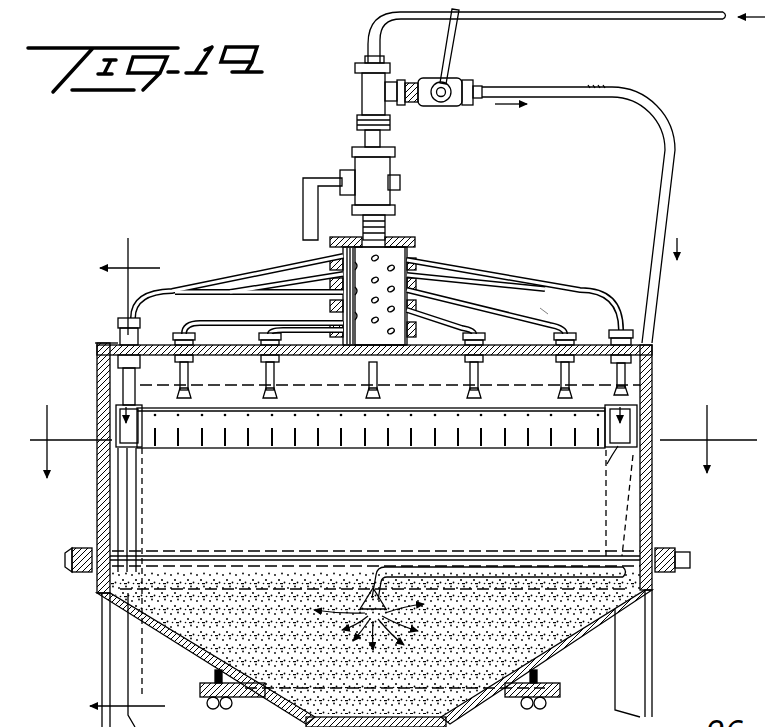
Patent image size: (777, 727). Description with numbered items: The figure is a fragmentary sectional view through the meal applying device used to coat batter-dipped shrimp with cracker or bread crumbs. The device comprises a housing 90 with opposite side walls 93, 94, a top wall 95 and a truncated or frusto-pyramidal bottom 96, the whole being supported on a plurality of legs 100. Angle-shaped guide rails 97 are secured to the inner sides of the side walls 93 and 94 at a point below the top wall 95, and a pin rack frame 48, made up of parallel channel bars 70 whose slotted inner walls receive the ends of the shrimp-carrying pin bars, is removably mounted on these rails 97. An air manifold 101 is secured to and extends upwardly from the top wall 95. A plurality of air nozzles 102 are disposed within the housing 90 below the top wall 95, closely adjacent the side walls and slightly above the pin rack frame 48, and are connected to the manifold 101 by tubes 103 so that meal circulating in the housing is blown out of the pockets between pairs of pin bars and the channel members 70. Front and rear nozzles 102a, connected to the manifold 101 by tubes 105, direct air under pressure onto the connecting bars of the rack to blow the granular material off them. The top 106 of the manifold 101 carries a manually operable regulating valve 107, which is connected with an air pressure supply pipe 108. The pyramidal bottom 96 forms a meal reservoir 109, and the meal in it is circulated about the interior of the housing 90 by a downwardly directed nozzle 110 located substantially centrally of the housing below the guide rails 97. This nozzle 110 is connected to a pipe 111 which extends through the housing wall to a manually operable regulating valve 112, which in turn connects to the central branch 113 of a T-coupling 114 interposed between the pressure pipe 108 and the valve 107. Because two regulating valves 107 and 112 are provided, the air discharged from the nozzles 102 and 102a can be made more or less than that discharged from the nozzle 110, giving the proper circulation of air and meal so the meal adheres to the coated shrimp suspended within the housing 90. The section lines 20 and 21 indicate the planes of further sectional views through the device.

The section line 20- 20 is at (146, 482).
The section line 21- 21 is at (360, 549).
The pin rack frame 48 is at (556, 450).
The channel bars 70 is at (117, 422).
The housing 90 is at (655, 490).
The side wall 93 is at (101, 495).
The side wall 94 is at (652, 462).
The top wall 95 is at (594, 348).
The frusto-pyramidal bottom 96 is at (557, 652).
The guide rails 97 is at (608, 463).
The legs 100 is at (104, 670).
The air manifold 101 is at (413, 247).
The air nozzles 102 is at (626, 393).
The front and rear nozzles 102a is at (566, 392).
The tubes 103 is at (563, 285).
The tubes 105 is at (538, 313).
The top of manifold 106 is at (402, 238).
The regulating valve 107 is at (350, 168).
The air pressure supply pipe 108 is at (549, 14).
The meal reservoir 109 is at (598, 614).
The downwardly directed nozzle 110 is at (374, 598).
The pipe 111 is at (485, 572).
The regulating valve 112 is at (463, 100).
The central branch 113 is at (384, 82).
The T-coupling 114 is at (362, 88).